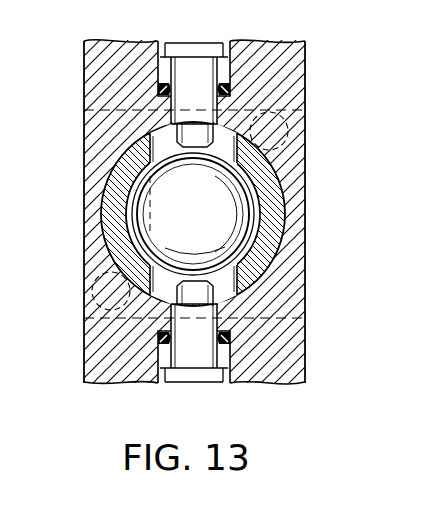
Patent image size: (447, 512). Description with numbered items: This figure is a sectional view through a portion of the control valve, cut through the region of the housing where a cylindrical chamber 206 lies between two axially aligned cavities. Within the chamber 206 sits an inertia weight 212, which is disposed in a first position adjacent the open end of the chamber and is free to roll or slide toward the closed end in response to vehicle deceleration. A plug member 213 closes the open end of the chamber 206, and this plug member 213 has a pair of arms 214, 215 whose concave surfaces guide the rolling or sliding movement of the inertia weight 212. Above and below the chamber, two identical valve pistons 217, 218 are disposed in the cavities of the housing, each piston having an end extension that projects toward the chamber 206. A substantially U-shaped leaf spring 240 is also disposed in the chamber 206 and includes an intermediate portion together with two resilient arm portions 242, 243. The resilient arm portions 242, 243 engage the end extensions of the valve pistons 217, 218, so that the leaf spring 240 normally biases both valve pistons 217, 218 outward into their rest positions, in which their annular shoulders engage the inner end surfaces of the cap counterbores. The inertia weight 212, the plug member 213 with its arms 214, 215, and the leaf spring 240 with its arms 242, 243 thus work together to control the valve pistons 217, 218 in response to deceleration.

The cylindrical chamber 206 is at (274, 239).
The inertia weight 212 is at (193, 214).
The plug member 213 is at (280, 329).
The arm 214 is at (107, 197).
The arm 215 is at (277, 193).
The valve piston 217 is at (203, 47).
The valve piston 218 is at (203, 379).
The leaf spring 240 is at (99, 232).
The resilient arm portion 242 is at (158, 133).
The resilient arm portion 243 is at (224, 290).